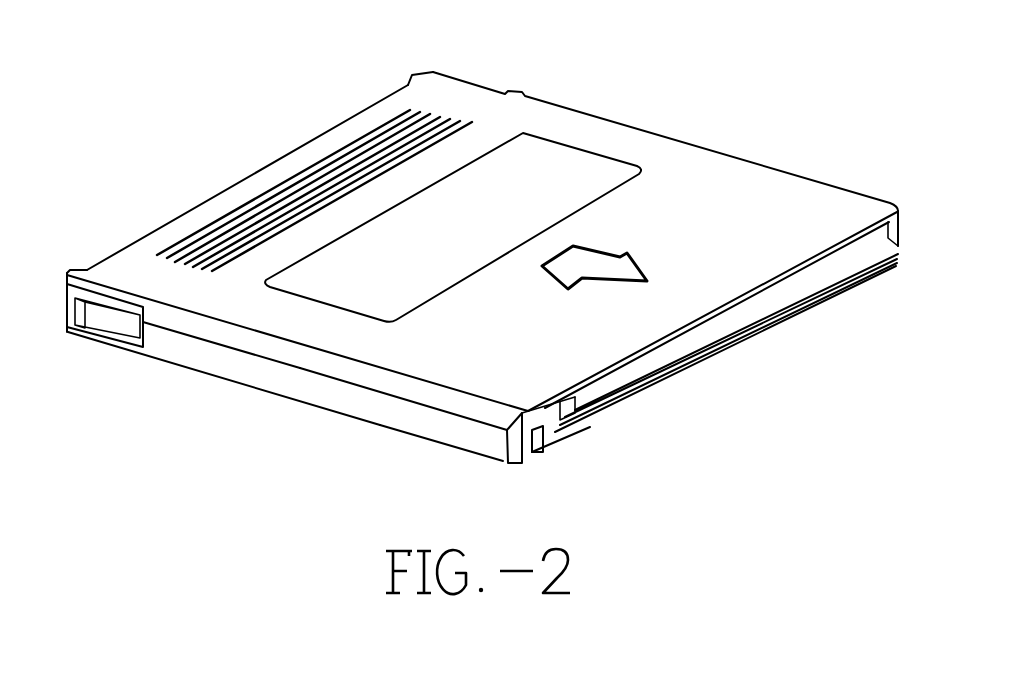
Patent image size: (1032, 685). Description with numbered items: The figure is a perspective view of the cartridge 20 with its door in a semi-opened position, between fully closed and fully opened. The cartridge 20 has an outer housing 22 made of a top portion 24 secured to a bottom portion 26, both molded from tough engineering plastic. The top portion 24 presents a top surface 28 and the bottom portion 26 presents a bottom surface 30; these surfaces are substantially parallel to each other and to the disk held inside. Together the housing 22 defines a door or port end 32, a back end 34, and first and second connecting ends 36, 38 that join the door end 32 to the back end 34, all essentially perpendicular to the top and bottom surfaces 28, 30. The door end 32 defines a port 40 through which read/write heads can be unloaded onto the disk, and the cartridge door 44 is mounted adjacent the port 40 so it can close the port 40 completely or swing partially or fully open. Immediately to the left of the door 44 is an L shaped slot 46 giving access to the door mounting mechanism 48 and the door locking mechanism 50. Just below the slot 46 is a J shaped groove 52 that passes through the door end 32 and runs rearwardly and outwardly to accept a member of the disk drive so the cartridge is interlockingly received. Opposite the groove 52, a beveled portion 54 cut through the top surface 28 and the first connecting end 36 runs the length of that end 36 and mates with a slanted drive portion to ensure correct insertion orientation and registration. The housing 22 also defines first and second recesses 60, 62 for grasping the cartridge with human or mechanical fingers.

The cartridge 20 is at (796, 128).
The outer housing 22 is at (595, 135).
The top portion 24 is at (260, 345).
The bottom portion 26 is at (280, 378).
The top surface 28 is at (552, 138).
The bottom surface 30 is at (449, 450).
The door end 32 is at (812, 308).
The back end 34 is at (265, 167).
The first connecting end 36 is at (373, 410).
The second connecting end 38 is at (713, 148).
The port 40 is at (647, 392).
The cartridge door 44 is at (697, 343).
The L shaped slot 46 is at (560, 400).
The door mounting mechanism 48 is at (583, 417).
The door locking mechanism 50 is at (520, 423).
The J shaped groove 52 is at (540, 452).
The beveled portion 54 is at (197, 328).
The first recess 60 is at (118, 318).
The second recess 62 is at (430, 70).